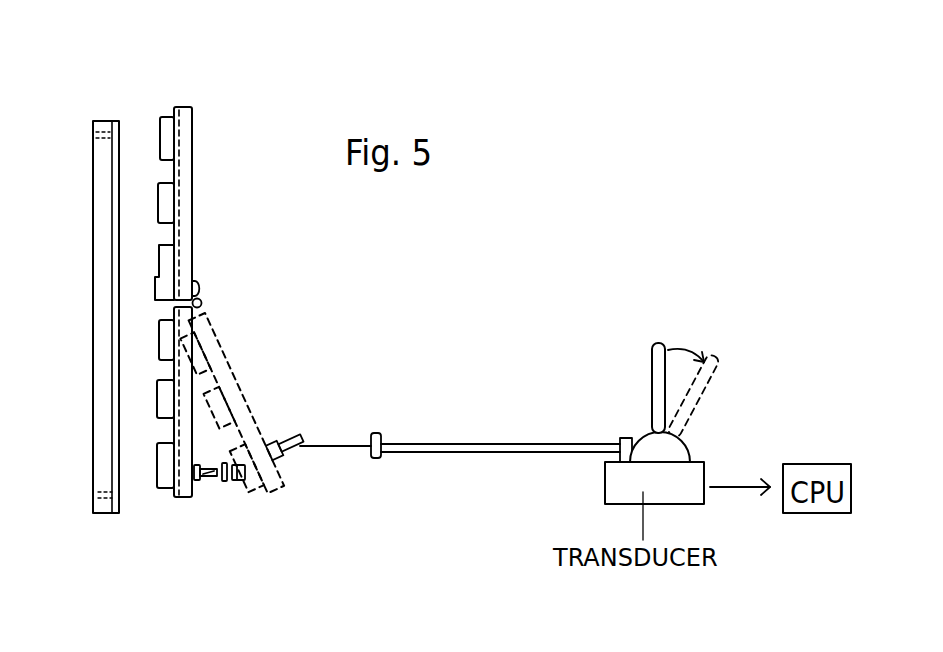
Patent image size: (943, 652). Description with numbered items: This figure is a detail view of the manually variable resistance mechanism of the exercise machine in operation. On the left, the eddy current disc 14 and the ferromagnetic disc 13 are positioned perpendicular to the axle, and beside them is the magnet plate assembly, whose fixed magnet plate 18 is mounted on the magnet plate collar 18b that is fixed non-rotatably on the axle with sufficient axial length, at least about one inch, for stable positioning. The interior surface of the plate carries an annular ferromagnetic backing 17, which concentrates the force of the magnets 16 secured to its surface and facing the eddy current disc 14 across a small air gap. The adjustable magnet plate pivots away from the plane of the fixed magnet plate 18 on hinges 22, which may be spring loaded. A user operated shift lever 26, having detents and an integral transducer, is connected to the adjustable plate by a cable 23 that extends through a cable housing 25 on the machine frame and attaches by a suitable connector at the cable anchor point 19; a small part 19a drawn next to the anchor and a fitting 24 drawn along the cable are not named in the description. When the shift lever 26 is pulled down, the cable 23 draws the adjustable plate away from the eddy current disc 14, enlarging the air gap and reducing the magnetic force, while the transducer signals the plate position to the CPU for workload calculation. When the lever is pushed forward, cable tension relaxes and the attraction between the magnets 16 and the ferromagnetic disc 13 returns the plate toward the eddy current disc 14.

The ferromagnetic disc 13 is at (98, 148).
The eddy current disc 14 is at (113, 186).
The magnets 16 is at (167, 127).
The annular ferromagnetic backing 17 is at (178, 106).
The fixed magnet plate 18 is at (185, 136).
The magnet plate collar 18b is at (196, 284).
The hinges 22 is at (203, 302).
The cable anchor point 19 is at (207, 482).
The nut 19a is at (237, 482).
The cable 23 is at (340, 450).
The coupling 24 is at (377, 432).
The cable housing 25 is at (492, 443).
The shift lever 26 is at (657, 382).